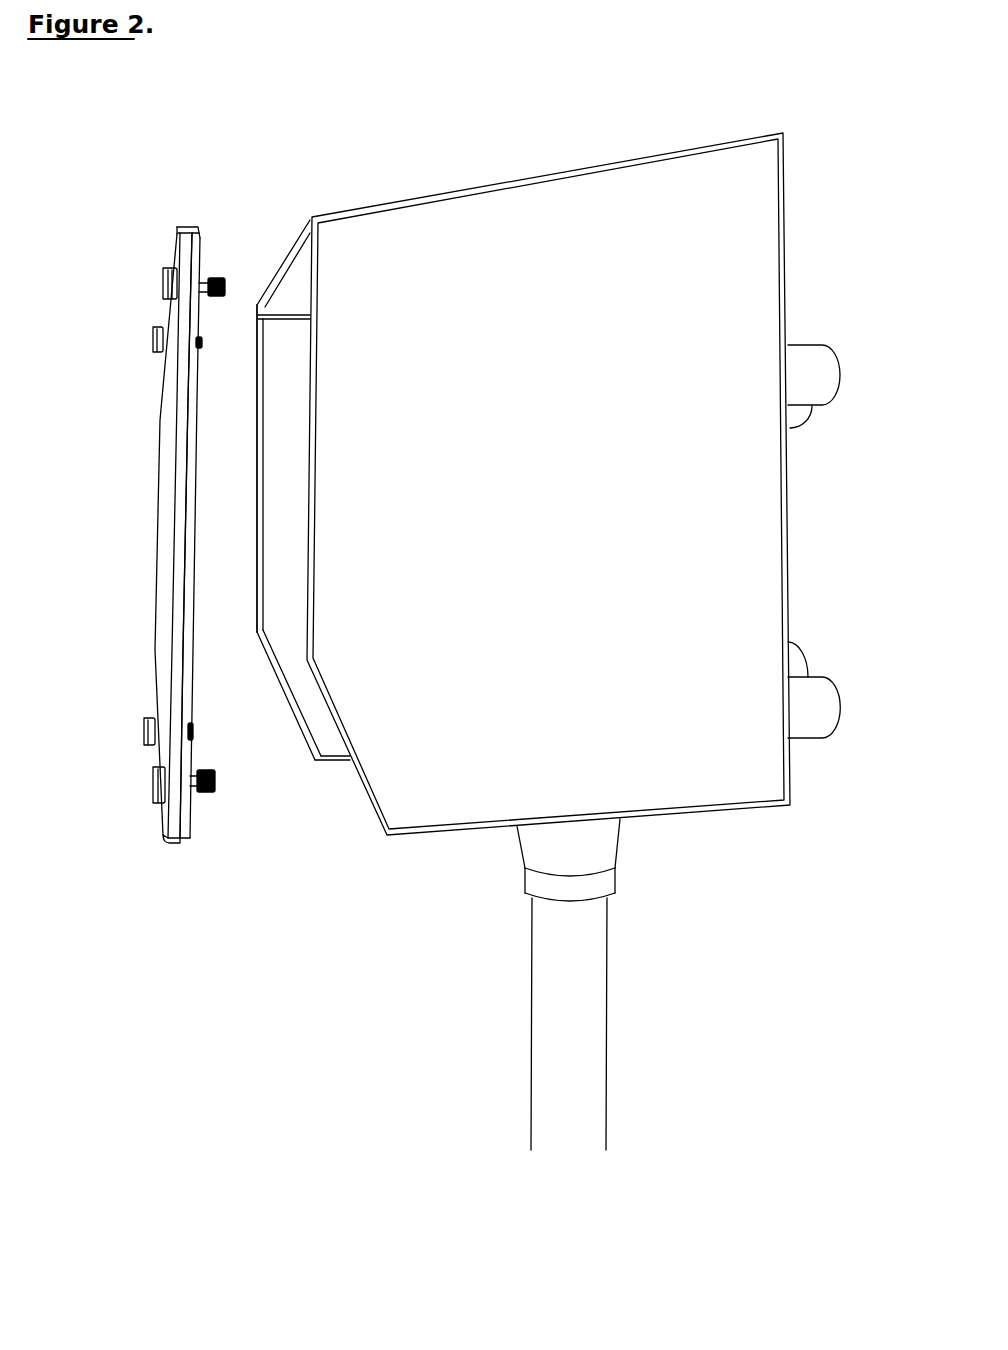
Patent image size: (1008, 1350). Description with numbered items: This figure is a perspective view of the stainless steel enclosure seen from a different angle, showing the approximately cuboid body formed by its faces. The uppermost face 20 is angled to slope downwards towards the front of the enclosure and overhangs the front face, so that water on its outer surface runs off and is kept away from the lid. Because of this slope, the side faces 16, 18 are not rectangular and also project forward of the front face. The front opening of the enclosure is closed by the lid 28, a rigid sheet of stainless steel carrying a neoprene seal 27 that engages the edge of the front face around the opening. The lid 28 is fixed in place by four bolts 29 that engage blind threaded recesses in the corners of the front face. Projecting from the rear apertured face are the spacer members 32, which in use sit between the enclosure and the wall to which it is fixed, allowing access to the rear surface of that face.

The side face 16 is at (241, 399).
The side face 18 is at (563, 213).
The uppermost face 20 is at (303, 438).
The seal 27 is at (221, 535).
The lid 28 is at (130, 535).
The bolts 29 is at (159, 550).
The spacer members 32 is at (839, 484).